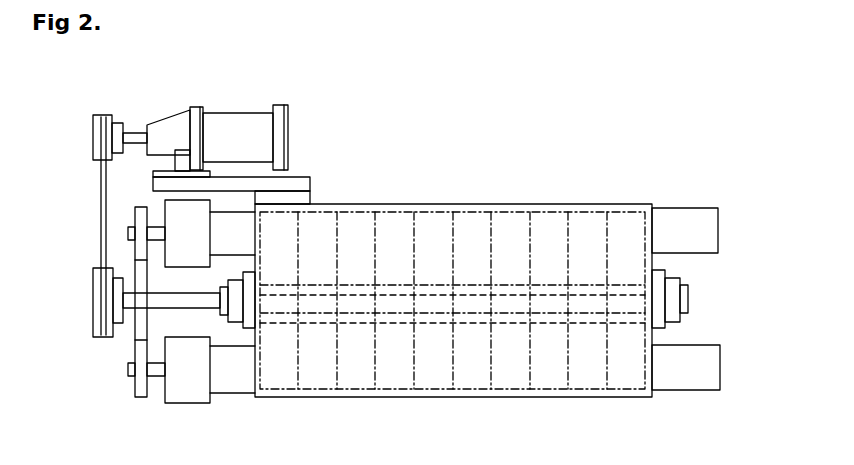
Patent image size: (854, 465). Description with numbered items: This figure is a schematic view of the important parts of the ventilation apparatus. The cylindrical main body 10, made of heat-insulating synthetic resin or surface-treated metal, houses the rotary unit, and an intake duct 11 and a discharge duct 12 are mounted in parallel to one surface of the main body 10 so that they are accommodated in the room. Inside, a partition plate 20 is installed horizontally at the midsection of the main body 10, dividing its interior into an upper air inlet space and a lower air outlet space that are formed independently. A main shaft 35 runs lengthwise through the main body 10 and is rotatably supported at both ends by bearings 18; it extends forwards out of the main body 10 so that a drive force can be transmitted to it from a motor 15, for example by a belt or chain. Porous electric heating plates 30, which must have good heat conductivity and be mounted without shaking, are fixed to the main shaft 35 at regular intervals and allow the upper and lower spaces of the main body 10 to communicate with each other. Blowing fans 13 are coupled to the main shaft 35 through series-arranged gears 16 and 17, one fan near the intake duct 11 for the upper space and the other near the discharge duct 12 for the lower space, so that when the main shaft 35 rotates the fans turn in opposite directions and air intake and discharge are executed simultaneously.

The main body 10 is at (470, 203).
The intake duct 11 is at (688, 208).
The discharge duct 12 is at (680, 392).
The blowing fan 13 is at (163, 201).
The motor 15 is at (238, 118).
The gear 16 is at (135, 337).
The gear 17 is at (138, 208).
The bearing 18 is at (233, 325).
The partition plate 20 is at (437, 323).
The porous electric heating plate 30 is at (607, 368).
The main shaft 35 is at (395, 287).